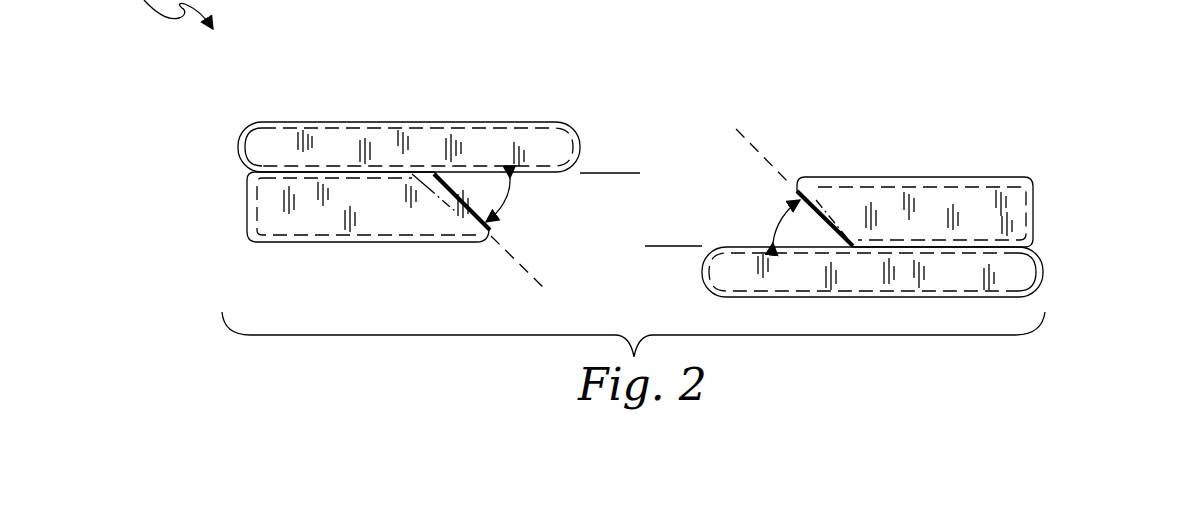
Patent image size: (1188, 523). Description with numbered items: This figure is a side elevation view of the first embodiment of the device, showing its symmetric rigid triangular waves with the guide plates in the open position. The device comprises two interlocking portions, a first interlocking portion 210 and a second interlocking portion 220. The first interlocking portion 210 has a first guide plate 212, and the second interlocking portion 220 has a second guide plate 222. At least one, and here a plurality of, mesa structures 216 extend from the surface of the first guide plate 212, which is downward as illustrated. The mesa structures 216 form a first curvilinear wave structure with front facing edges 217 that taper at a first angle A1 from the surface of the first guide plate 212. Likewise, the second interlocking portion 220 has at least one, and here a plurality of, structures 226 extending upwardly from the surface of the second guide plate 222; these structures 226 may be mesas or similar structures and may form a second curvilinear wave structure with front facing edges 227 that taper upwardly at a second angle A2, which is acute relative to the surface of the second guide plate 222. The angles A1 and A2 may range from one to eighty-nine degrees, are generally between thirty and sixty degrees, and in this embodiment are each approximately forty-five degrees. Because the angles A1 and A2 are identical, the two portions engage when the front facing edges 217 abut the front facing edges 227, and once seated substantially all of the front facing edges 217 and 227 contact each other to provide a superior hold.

The first interlocking portion 210 is at (366, 86).
The first guide plate 212 is at (241, 151).
The mesa structures 216 is at (300, 218).
The front facing edges 217 is at (459, 208).
The first angle A1 is at (505, 200).
The second interlocking portion 220 is at (1061, 134).
The second guide plate 222 is at (1031, 270).
The structures 226 is at (917, 188).
The front facing edges 227 is at (826, 214).
The second angle A2 is at (777, 221).